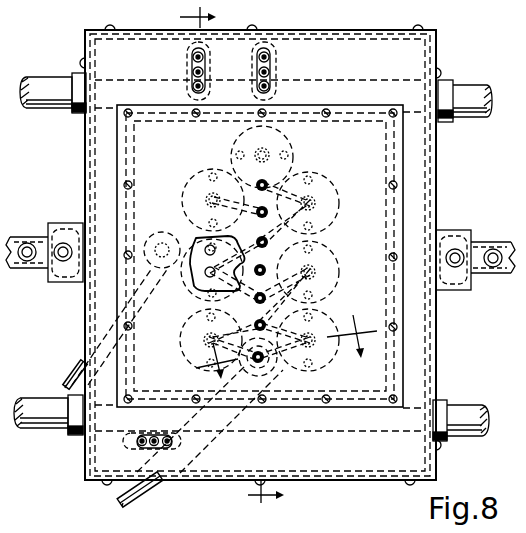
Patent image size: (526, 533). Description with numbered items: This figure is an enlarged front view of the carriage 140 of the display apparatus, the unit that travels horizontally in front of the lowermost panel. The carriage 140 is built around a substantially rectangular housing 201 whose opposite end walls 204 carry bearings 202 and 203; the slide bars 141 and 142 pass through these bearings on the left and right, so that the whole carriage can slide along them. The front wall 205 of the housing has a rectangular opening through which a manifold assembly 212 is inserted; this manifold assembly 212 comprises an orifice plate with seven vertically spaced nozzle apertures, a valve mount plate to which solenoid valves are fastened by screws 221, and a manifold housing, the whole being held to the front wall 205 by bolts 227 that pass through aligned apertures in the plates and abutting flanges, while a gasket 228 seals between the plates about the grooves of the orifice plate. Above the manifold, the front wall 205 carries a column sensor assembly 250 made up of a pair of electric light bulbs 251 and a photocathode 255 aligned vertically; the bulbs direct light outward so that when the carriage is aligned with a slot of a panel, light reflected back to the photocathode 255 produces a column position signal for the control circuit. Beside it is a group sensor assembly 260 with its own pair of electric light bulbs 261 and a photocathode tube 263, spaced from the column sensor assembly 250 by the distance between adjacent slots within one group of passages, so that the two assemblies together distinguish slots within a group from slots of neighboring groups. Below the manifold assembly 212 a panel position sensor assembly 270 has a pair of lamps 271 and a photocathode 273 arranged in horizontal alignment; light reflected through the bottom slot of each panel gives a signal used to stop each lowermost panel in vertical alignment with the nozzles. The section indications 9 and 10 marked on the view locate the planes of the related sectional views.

The carriage 140 is at (443, 36).
The slide bar 141 is at (462, 117).
The slide bar 142 is at (462, 411).
The bearing 202 is at (80, 78).
The bearing 203 is at (68, 433).
The front wall 205 is at (352, 471).
The manifold assembly 212 is at (362, 402).
The screws 221 is at (299, 176).
The bolts 227 is at (400, 410).
The gasket 228 is at (334, 301).
The sensor assembly 250 is at (292, 69).
The electric light bulbs 251 is at (270, 58).
The photocathode 255 is at (271, 73).
The group sensor assembly 260 is at (183, 70).
The electric light bulbs 261 is at (206, 58).
The photocathode tube 263 is at (206, 72).
The panel position sensor assembly 270 is at (168, 438).
The light bulbs 271 is at (170, 435).
The photocathode 273 is at (157, 445).
The section line 9- 9 is at (221, 257).
The section line 10- 10 is at (287, 345).
The housing 201 is at (100, 532).
The end walls 204 is at (205, 532).